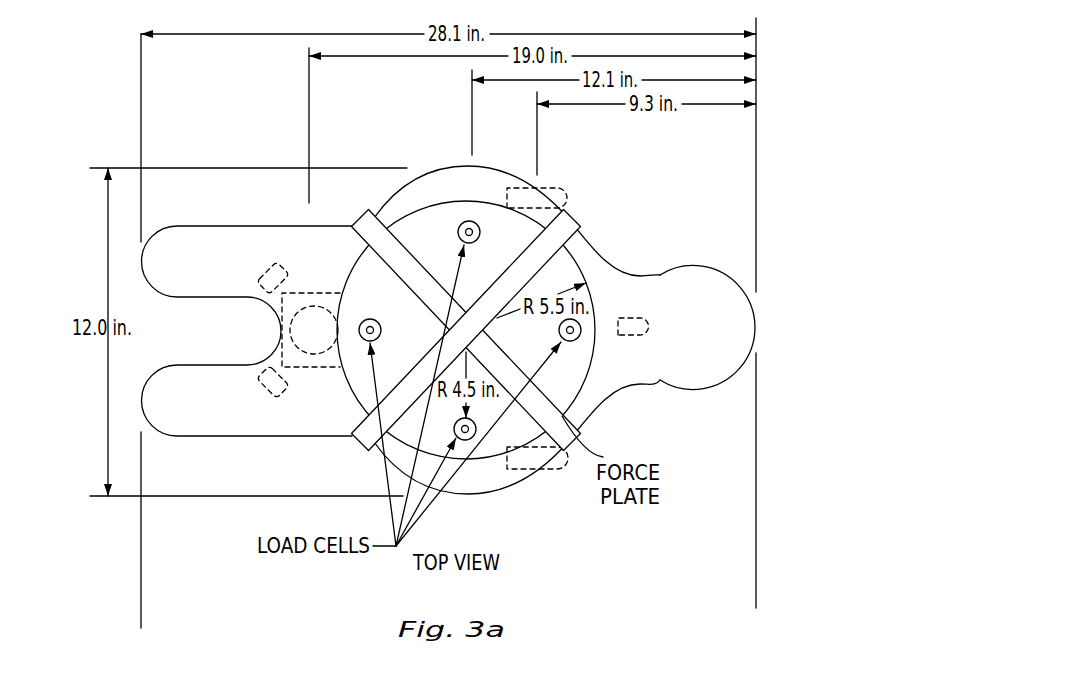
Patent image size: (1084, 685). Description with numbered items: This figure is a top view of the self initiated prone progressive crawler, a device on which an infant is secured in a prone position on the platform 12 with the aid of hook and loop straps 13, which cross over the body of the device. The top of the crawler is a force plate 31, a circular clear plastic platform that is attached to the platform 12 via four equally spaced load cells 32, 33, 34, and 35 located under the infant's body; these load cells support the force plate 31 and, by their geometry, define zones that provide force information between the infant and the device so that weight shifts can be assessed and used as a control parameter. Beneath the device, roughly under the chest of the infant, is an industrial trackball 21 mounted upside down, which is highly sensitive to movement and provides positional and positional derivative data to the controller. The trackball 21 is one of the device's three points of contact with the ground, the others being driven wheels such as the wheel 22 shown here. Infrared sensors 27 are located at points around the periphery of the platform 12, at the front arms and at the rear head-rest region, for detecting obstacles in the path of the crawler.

The platform 12 is at (745, 332).
The hook and loop straps 13 is at (574, 216).
The industrial trackball 21 is at (318, 342).
The wheel 22 is at (556, 468).
The infrared sensors 27 is at (268, 289).
The force plate 31 is at (428, 234).
The load cell 32 is at (369, 318).
The load cell 33 is at (471, 244).
The load cell 34 is at (569, 342).
The load cell 35 is at (454, 428).